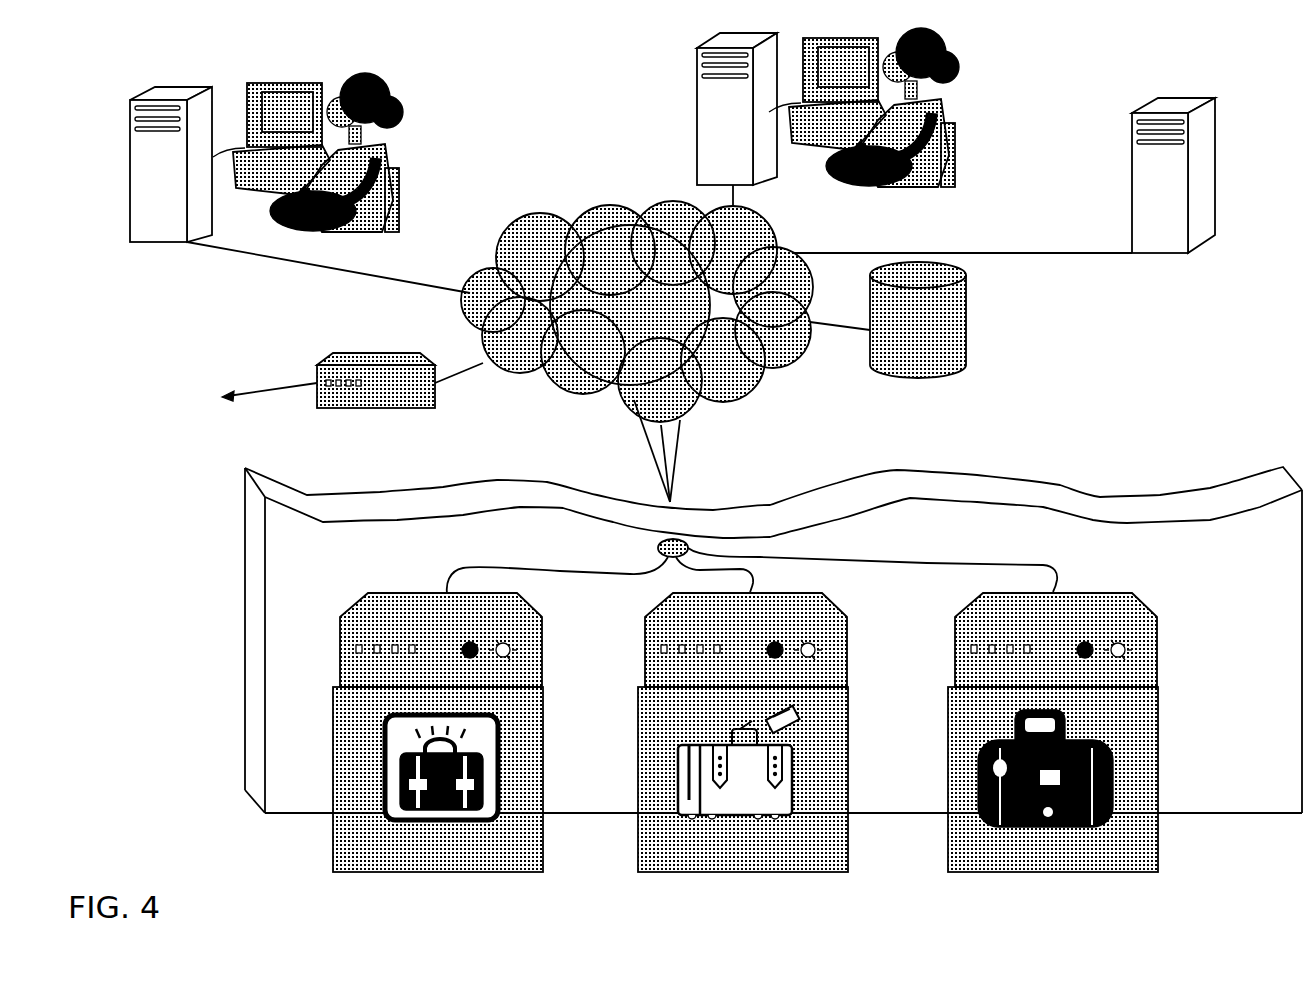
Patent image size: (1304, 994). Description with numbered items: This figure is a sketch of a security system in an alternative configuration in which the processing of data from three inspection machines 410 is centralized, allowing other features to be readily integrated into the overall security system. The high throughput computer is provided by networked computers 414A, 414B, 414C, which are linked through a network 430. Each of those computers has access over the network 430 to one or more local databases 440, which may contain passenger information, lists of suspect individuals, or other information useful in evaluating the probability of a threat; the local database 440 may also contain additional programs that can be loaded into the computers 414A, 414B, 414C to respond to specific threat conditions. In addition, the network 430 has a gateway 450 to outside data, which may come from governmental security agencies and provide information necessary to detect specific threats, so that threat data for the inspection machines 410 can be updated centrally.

The inspection machine 410 is at (397, 872).
The networked computer 414A is at (128, 235).
The networked computer 414B is at (697, 132).
The networked computer 414C is at (1215, 187).
The network 430 is at (747, 387).
The local database 440 is at (940, 373).
The gateway 450 is at (362, 408).